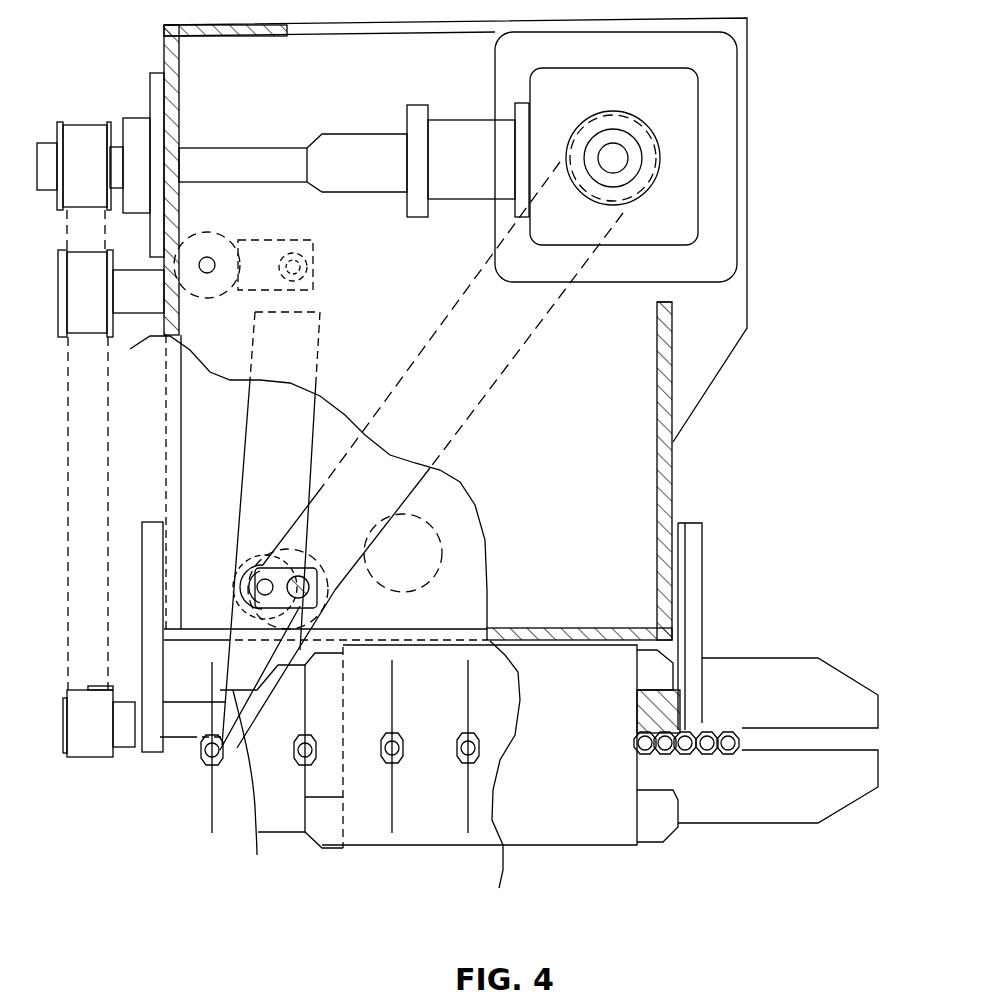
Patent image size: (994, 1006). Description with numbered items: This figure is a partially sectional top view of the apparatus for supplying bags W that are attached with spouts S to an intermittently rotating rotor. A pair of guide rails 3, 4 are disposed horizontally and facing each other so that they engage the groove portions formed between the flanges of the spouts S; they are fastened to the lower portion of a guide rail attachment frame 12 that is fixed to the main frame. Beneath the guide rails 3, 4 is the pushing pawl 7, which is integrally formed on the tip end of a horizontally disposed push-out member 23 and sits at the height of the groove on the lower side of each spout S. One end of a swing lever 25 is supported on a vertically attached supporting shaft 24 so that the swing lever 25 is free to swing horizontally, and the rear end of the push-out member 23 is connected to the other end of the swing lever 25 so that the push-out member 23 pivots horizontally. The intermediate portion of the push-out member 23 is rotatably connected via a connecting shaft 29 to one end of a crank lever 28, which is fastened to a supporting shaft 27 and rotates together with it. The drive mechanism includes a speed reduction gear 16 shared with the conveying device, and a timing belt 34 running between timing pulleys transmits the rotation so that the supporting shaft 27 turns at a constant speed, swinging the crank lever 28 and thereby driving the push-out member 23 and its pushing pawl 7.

The speed reduction gear 16 is at (718, 110).
The supporting shaft 24 is at (210, 258).
The swing lever 25 is at (267, 248).
The push-out member 23 is at (252, 425).
The timing belt 34 is at (540, 320).
The supporting shaft 27 is at (320, 598).
The connecting shaft 29 is at (252, 572).
The crank lever 28 is at (303, 577).
The pushing pawl 7 is at (319, 736).
The bag W is at (205, 808).
The guide rail attachment frame 12 is at (592, 828).
The spout S is at (732, 727).
The guide rail 3 is at (798, 672).
The guide rail 4 is at (803, 800).